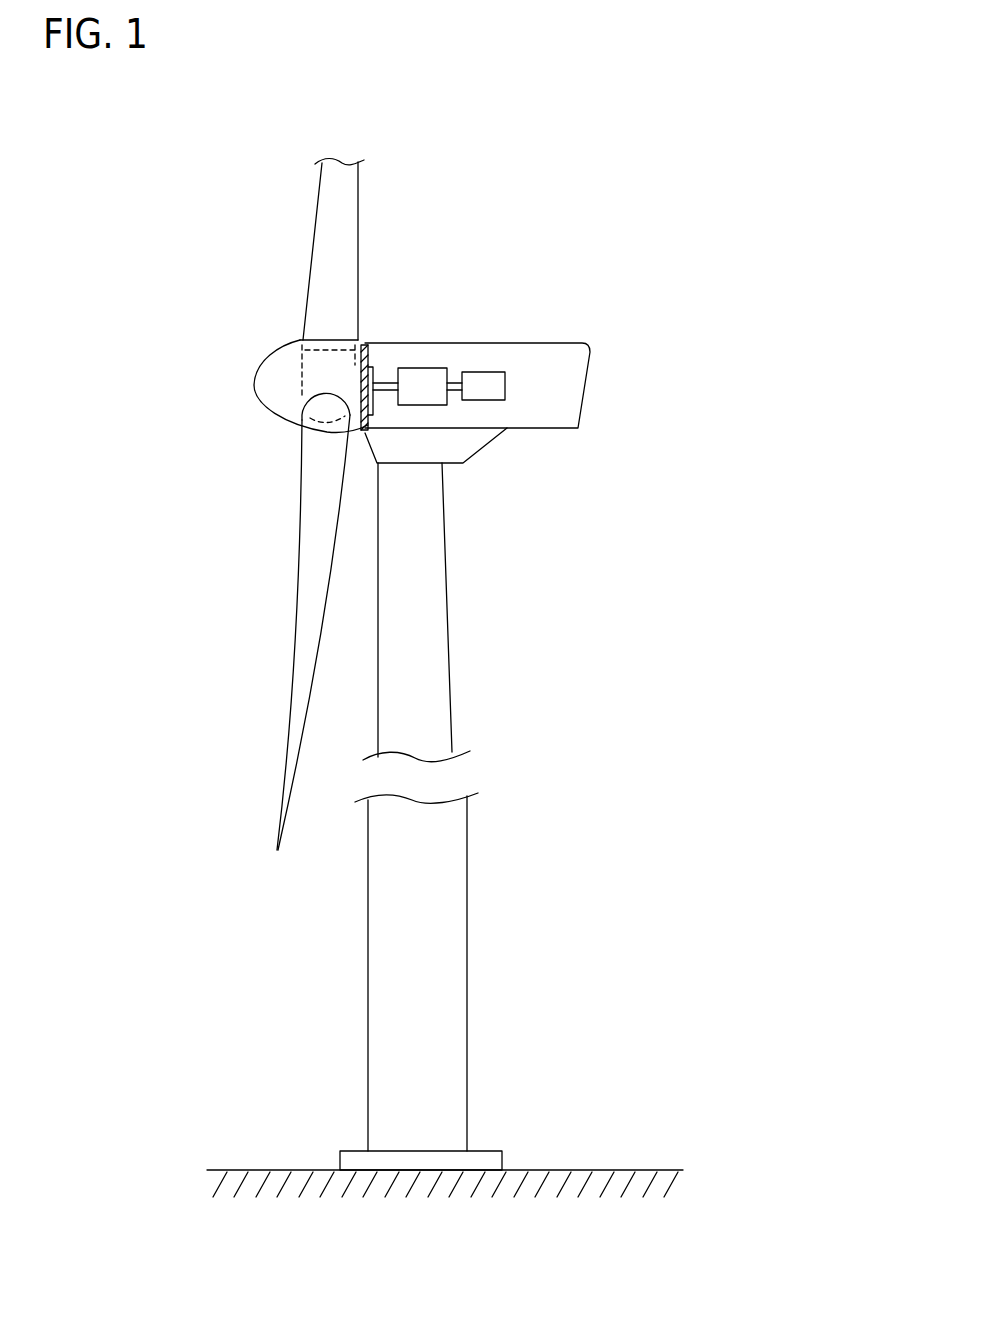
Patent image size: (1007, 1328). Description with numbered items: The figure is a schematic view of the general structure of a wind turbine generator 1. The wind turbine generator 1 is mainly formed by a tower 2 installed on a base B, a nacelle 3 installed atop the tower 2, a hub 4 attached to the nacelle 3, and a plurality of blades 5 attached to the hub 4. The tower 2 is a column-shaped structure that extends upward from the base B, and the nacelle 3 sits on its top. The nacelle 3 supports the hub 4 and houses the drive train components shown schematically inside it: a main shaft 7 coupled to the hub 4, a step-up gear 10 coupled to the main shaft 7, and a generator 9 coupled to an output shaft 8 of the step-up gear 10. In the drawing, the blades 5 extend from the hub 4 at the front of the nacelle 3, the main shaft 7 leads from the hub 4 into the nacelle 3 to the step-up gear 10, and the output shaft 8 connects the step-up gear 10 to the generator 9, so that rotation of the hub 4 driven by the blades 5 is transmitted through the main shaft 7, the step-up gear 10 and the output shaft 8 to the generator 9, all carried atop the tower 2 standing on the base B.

The wind turbine generator 1 is at (615, 270).
The tower 2 is at (450, 625).
The nacelle 3 is at (592, 378).
The hub 4 is at (275, 391).
The blades 5 is at (312, 263).
The main shaft 7 is at (384, 381).
The output shaft 8 is at (455, 385).
The generator 9 is at (485, 380).
The step-up gear 10 is at (423, 380).
The base B is at (495, 1150).